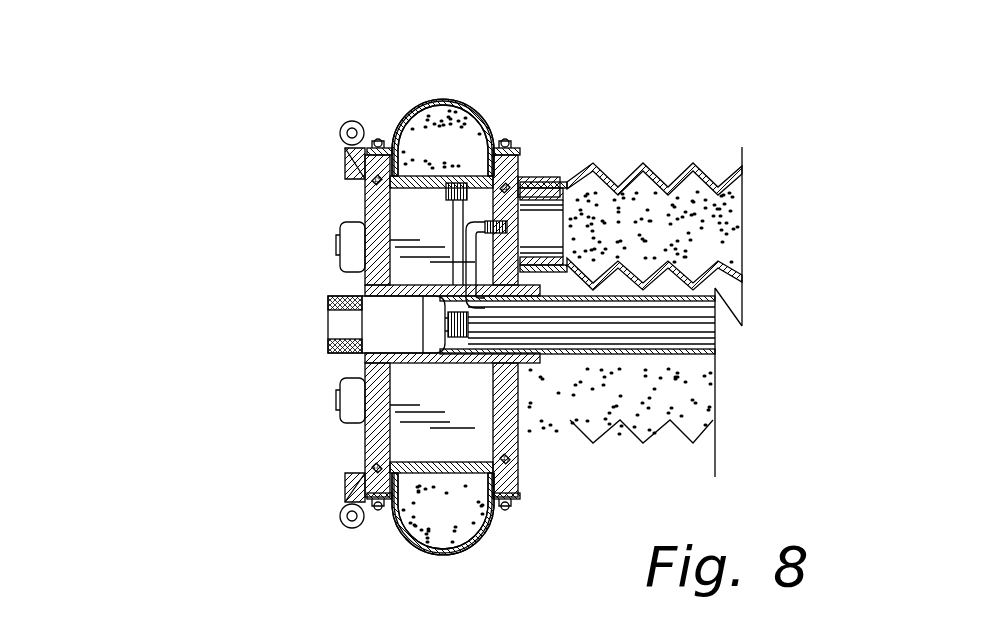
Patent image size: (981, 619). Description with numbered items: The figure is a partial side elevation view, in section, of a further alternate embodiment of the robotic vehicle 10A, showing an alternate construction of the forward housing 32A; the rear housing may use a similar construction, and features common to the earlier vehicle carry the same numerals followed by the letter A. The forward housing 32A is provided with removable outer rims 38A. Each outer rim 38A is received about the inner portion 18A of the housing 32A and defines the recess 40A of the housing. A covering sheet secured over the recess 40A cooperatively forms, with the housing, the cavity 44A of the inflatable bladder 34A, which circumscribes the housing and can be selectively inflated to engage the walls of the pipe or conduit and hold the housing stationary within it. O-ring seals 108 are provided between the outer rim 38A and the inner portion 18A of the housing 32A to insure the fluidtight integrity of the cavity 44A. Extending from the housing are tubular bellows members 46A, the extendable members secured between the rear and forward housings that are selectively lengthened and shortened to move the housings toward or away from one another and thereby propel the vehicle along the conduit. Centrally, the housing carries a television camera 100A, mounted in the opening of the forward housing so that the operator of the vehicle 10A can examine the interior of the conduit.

The robotic vehicle 10A is at (597, 76).
The inner portion of the housing 18A is at (365, 438).
The forward housing 32A is at (363, 210).
The inflatable bladder 34A is at (465, 98).
The removable outer rim 38A is at (522, 163).
The recess 40A is at (400, 138).
The cavity 44A is at (467, 160).
The bellows member 46A is at (676, 165).
The television camera 100A is at (443, 339).
The O-ring seals 108 is at (363, 192).